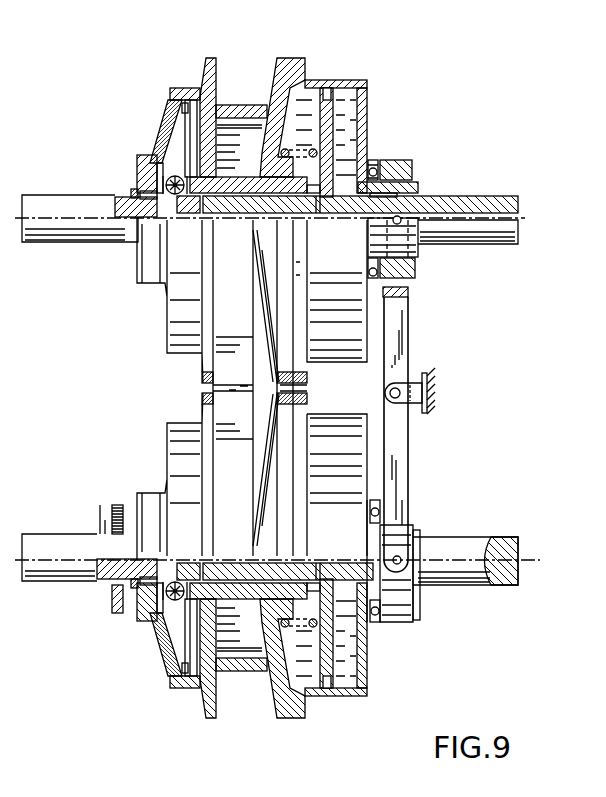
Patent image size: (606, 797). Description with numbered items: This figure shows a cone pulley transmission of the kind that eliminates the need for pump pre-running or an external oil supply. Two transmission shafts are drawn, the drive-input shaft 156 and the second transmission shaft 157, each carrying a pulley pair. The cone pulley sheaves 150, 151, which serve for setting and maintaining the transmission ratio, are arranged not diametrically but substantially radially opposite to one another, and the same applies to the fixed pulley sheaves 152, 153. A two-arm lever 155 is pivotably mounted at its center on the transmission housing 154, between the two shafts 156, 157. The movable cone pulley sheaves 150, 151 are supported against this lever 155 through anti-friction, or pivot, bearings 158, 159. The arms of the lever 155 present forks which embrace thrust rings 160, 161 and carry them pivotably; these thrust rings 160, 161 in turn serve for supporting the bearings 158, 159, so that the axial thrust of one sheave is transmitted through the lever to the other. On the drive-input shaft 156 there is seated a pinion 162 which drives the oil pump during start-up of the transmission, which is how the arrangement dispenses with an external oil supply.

The cone pulley sheave 150 is at (282, 718).
The cone pulley sheave 151 is at (282, 58).
The fixed pulley sheave 152 is at (208, 718).
The fixed pulley sheave 153 is at (207, 58).
The transmission housing 154 is at (430, 381).
The two-arm lever 155 is at (392, 332).
The drive-input shaft 156 is at (502, 585).
The transmission shaft 157 is at (462, 205).
The anti-friction bearing 158 is at (374, 622).
The anti-friction bearing 159 is at (378, 162).
The thrust ring 160 is at (403, 622).
The thrust ring 161 is at (405, 168).
The pinion 162 is at (117, 614).